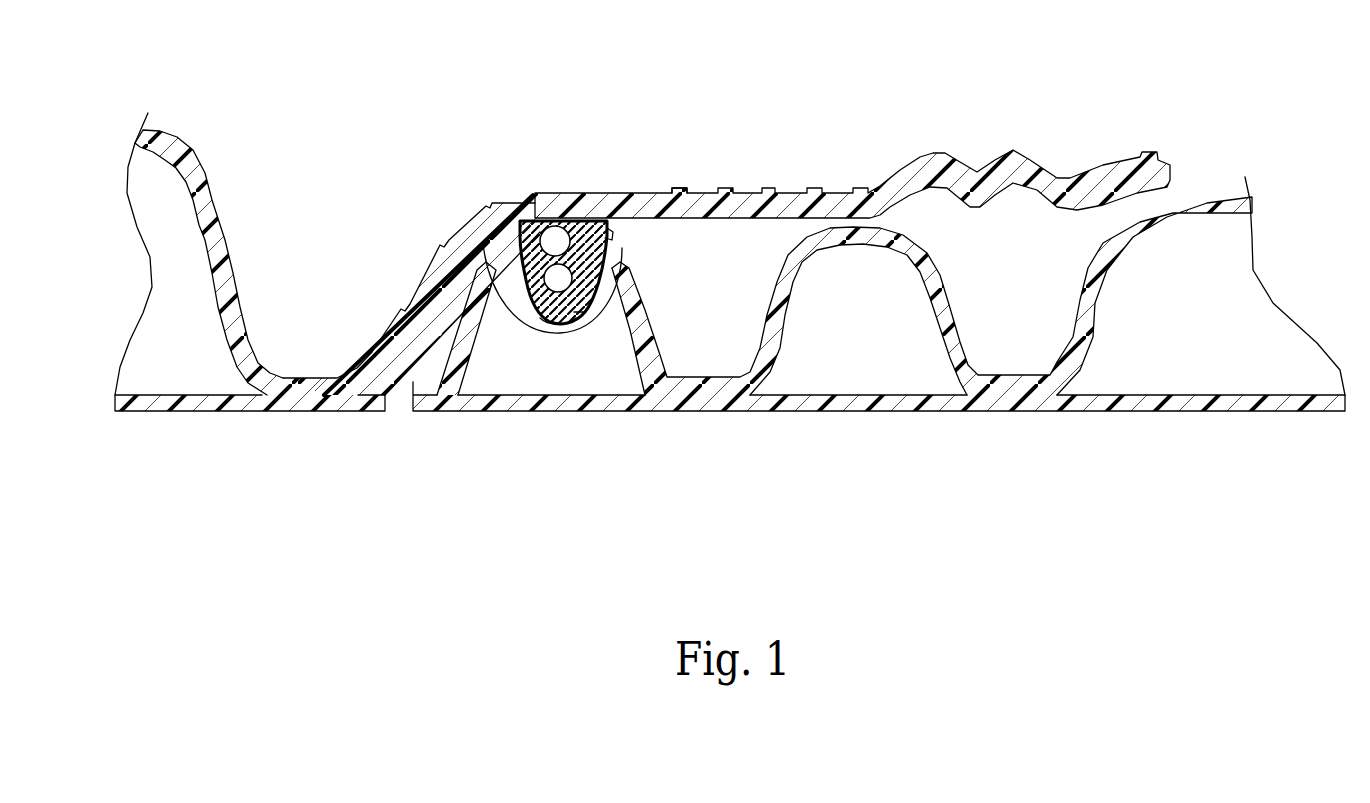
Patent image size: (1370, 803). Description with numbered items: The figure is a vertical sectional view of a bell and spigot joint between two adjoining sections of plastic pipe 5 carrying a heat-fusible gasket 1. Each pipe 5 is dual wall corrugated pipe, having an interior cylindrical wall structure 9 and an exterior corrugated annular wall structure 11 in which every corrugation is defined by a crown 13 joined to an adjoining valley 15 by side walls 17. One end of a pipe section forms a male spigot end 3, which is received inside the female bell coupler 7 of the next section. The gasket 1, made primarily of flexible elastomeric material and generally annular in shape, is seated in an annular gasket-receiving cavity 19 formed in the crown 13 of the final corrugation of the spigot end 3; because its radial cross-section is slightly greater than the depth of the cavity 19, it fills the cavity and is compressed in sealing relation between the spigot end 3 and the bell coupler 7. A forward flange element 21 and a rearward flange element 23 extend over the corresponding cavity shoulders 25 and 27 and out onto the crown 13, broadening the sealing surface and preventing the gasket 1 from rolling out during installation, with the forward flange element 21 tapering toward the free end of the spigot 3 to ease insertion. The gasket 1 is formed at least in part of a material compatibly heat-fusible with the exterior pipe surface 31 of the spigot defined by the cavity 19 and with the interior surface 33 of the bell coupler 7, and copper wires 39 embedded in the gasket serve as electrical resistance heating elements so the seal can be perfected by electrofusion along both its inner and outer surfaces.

The gasket 1 is at (533, 195).
The spigot end 3 is at (642, 430).
The pipe 5 is at (196, 109).
The bell coupler 7 is at (703, 192).
The interior cylindrical wall structure 9 is at (176, 412).
The exterior corrugated annular wall structure 11 is at (183, 157).
The crown 13 is at (812, 240).
The valley 15 is at (287, 378).
The side walls 17 is at (223, 247).
The gasket-receiving cavity 19 is at (545, 318).
The forward flange element 21 is at (513, 230).
The rearward flange element 23 is at (622, 222).
The cavity shoulder 25 is at (487, 253).
The cavity shoulder 27 is at (612, 238).
The exterior pipe surface 31 is at (579, 308).
The interior surface 33 is at (607, 218).
The copper wires 39 is at (575, 217).